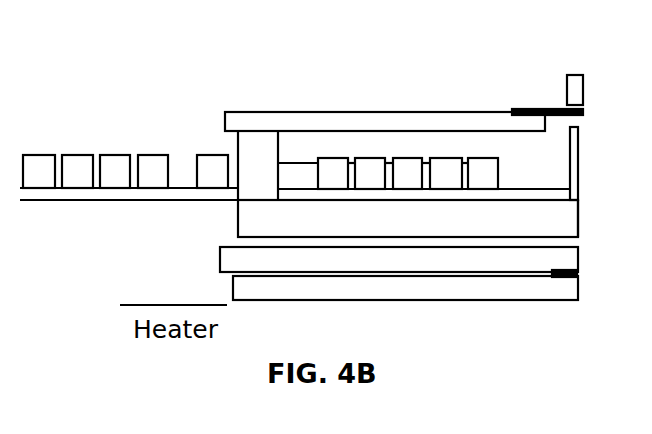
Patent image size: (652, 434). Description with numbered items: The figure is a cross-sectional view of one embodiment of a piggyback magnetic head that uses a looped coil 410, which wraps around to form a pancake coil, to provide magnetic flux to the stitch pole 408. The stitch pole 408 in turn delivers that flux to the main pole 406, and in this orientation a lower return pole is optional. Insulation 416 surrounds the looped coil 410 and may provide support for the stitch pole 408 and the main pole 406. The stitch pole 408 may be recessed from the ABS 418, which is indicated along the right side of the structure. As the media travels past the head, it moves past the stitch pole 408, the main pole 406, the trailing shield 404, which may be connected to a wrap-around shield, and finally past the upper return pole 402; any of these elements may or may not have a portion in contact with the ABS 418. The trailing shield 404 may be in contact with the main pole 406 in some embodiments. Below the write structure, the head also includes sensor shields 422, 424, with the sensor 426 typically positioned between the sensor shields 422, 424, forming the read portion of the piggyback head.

The upper return pole 402 is at (585, 88).
The trailing shield 404 is at (578, 170).
The main pole 406 is at (546, 110).
The stitch pole 408 is at (410, 112).
The looped coil 410 is at (482, 158).
The insulation 416 is at (462, 231).
The ABS 418 is at (579, 222).
The sensor shield 422 is at (220, 258).
The sensor shield 424 is at (233, 283).
The sensor 426 is at (574, 267).